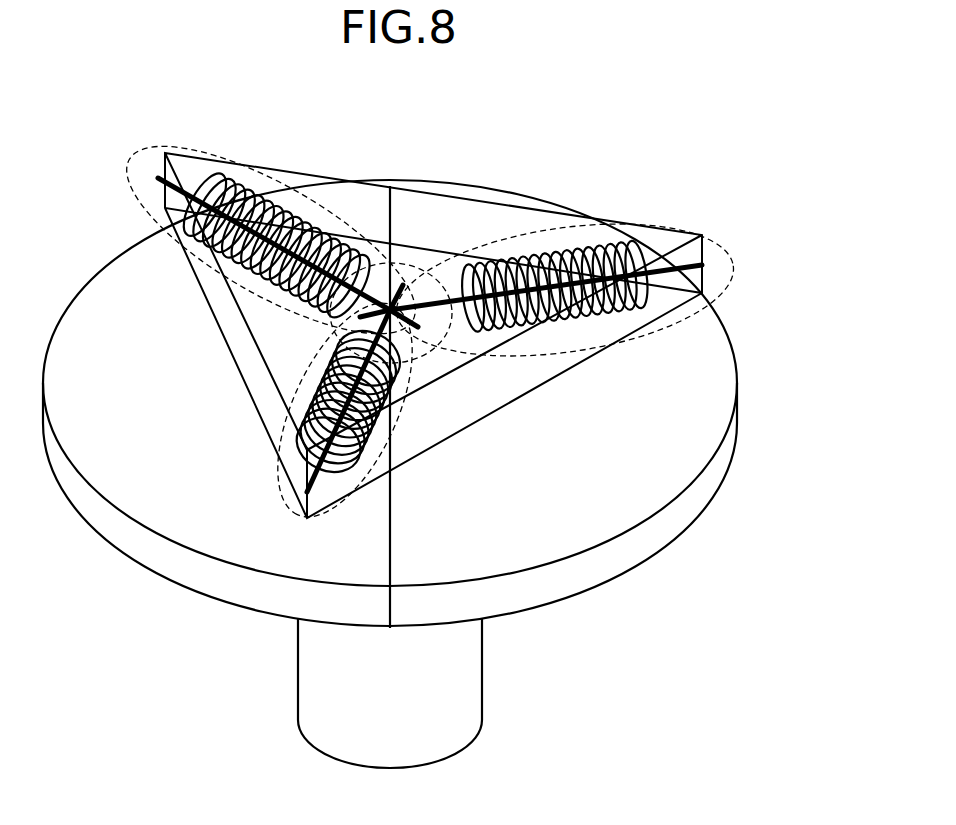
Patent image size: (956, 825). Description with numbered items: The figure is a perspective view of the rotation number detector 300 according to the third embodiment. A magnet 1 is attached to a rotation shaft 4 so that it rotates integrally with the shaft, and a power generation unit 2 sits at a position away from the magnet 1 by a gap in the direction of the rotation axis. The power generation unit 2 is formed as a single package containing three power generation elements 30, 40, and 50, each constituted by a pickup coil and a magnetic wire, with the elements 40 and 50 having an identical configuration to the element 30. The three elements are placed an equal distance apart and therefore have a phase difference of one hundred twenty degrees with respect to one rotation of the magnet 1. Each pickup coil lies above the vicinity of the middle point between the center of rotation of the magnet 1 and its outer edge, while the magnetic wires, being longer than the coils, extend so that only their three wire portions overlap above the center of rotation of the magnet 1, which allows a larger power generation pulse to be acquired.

The rotation number detector 300 is at (392, 427).
The magnet 1 is at (570, 590).
The rotation shaft 4 is at (470, 688).
The power generation unit 2 is at (328, 177).
The power generation element 30 is at (197, 147).
The power generation element 40 is at (267, 473).
The power generation element 50 is at (663, 220).